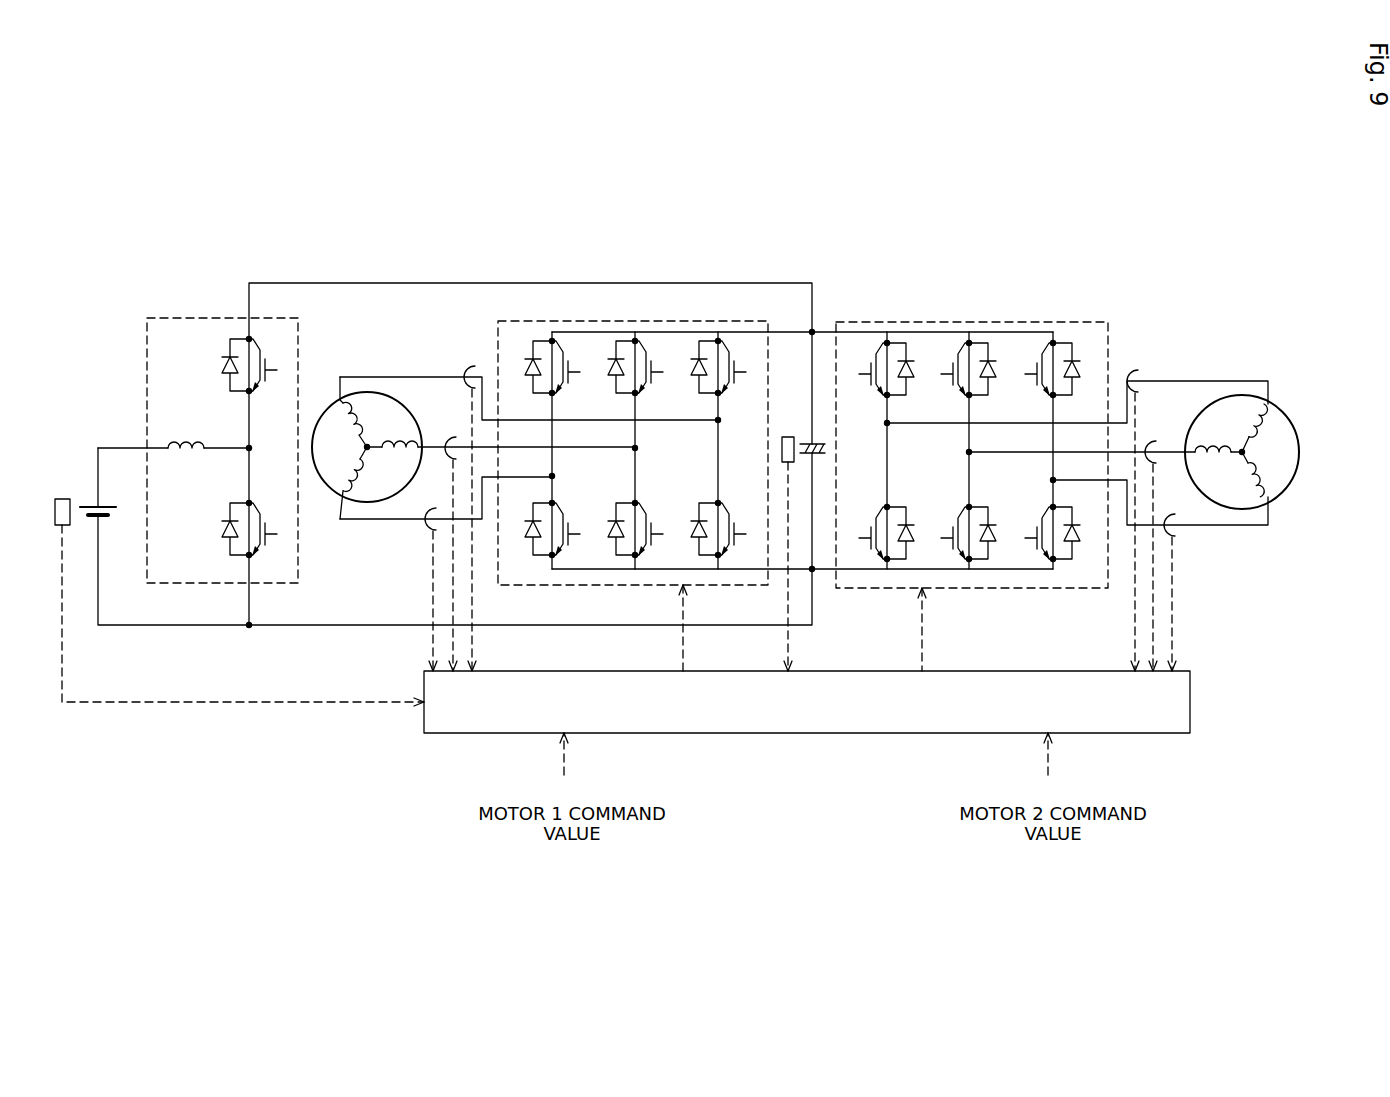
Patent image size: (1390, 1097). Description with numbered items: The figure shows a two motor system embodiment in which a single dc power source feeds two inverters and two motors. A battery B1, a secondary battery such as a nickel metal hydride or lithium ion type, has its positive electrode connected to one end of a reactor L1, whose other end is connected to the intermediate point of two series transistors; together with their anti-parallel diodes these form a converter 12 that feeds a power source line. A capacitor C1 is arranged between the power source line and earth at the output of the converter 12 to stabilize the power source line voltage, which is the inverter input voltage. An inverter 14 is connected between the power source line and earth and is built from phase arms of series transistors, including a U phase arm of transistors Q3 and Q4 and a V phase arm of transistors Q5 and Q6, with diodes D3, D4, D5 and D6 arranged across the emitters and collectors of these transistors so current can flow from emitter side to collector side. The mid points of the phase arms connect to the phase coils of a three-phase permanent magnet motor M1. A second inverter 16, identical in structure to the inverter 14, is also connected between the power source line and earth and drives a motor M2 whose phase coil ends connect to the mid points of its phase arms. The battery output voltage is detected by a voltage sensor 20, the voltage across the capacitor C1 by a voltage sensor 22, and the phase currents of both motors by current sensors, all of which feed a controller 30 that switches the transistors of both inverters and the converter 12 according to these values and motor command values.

The converter 12 is at (198, 405).
The inverter 14 is at (633, 456).
The inverter 16 is at (1022, 322).
The voltage sensor 20 is at (62, 499).
The voltage sensor 22 is at (788, 437).
The controller 30 is at (777, 736).
The battery B1 is at (104, 497).
The reactor L1 is at (173, 431).
The capacitor C1 is at (818, 442).
The motor M1 is at (336, 401).
The motor M2 is at (1250, 442).
The NPN transistor Q3 is at (652, 364).
The NPN transistor Q4 is at (653, 525).
The NPN transistor Q5 is at (737, 364).
The NPN transistor Q6 is at (737, 525).
The diode D3 is at (609, 368).
The diode D4 is at (609, 532).
The diode D5 is at (692, 368).
The diode D6 is at (692, 532).